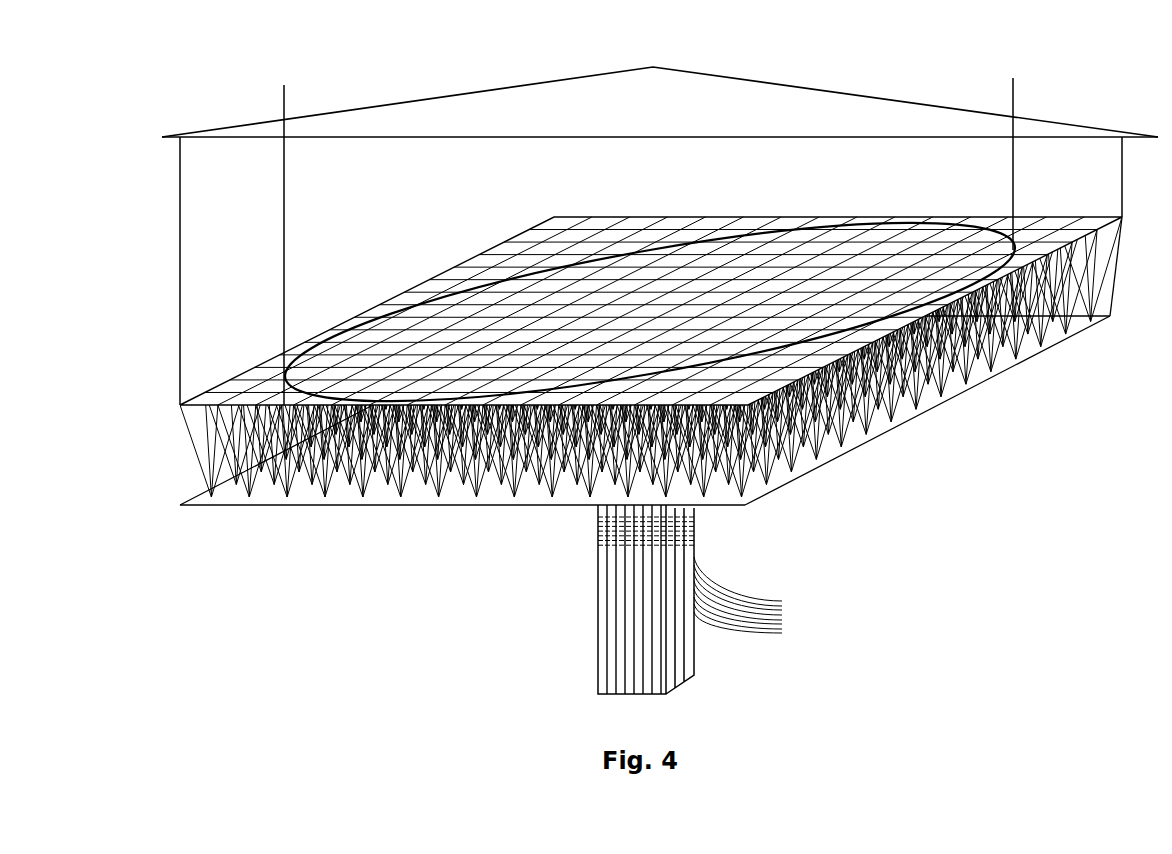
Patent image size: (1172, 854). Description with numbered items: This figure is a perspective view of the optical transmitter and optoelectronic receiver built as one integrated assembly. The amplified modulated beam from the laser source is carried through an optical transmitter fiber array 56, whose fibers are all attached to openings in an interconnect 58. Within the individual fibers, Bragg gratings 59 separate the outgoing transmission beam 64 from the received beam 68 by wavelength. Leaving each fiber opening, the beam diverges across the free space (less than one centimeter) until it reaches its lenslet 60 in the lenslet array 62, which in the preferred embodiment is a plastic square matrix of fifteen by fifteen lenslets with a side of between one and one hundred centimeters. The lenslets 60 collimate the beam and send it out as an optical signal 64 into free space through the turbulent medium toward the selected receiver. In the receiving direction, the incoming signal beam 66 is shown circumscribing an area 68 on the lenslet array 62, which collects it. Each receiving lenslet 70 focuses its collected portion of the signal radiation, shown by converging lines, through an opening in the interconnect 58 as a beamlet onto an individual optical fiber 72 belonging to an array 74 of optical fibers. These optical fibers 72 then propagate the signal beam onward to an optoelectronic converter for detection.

The optical transmitter fiber array 56 is at (782, 617).
The interconnect 58 is at (225, 497).
The Bragg gratings 59 is at (598, 527).
The lenslet 60 is at (777, 250).
The lenslet array 62 is at (442, 275).
The optical signal 64 is at (725, 95).
The signal beam 66 is at (283, 207).
The area 68 is at (372, 312).
The receiving lenslet 70 is at (543, 288).
The optical fiber 72 is at (617, 590).
The array of optical fibers 74 is at (598, 658).